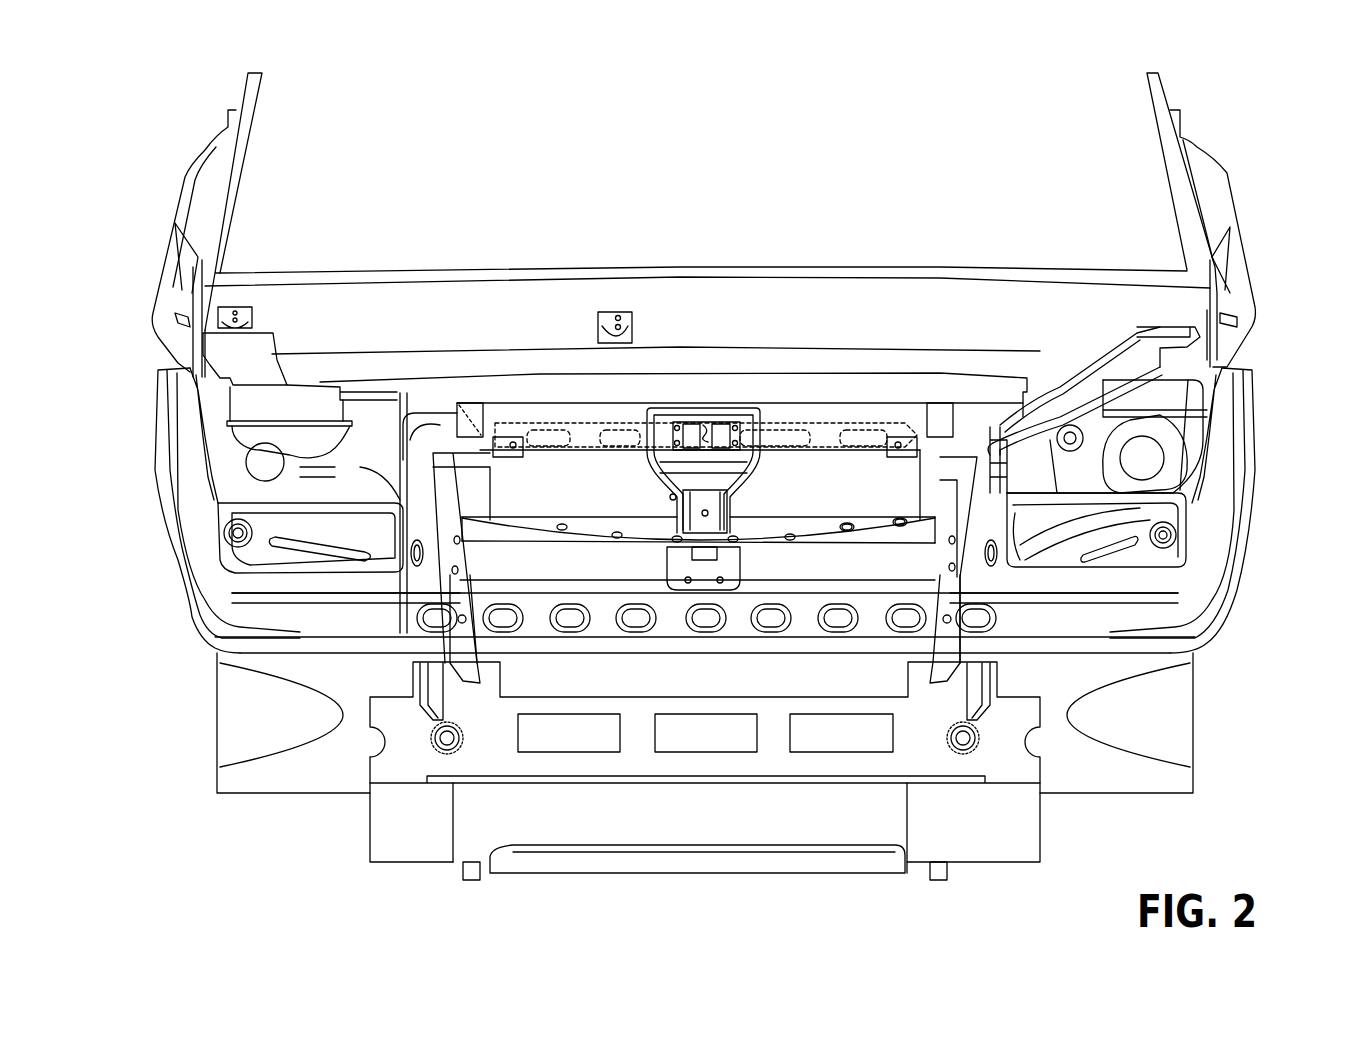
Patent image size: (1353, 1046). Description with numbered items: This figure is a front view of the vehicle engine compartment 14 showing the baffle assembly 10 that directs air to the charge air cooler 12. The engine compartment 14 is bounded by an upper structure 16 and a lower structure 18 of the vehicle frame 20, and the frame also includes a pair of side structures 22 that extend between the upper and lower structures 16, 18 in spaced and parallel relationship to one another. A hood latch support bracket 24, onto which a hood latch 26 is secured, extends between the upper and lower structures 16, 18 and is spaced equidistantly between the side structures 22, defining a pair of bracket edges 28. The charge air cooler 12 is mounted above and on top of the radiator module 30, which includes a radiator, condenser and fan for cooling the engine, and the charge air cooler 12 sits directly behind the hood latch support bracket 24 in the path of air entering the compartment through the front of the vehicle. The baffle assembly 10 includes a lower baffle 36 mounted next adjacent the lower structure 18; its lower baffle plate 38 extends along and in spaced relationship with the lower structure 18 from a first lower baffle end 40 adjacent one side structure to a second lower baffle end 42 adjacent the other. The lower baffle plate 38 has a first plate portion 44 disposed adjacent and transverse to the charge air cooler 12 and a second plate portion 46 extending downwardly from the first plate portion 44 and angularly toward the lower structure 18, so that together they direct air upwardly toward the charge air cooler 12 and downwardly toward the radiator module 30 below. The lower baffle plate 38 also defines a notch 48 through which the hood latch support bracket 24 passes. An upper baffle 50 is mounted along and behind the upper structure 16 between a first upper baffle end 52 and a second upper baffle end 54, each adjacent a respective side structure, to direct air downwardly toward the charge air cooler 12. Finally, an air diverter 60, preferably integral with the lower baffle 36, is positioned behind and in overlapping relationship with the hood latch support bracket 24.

The baffle assembly 10 is at (879, 422).
The charge air cooler 12 is at (883, 487).
The engine compartment 14 is at (583, 385).
The upper structure 16 is at (1038, 387).
The lower structure 18 is at (1040, 620).
The vehicle frame 20 is at (1227, 540).
The side structures 22 is at (403, 540).
The hood latch support bracket 24 is at (688, 583).
The hood latch 26 is at (713, 593).
The bracket edges 28 is at (655, 480).
The radiator module 30 is at (715, 820).
The lower baffle 36 is at (873, 548).
The lower baffle plate 38 is at (840, 540).
The first lower baffle end 40 is at (1007, 497).
The second lower baffle end 42 is at (433, 510).
The first plate portion 44 is at (578, 500).
The second plate portion 46 is at (450, 630).
The notch 48 is at (706, 410).
The upper baffle 50 is at (800, 425).
The first upper baffle end 52 is at (920, 430).
The second upper baffle end 54 is at (493, 427).
The air diverter 60 is at (673, 497).